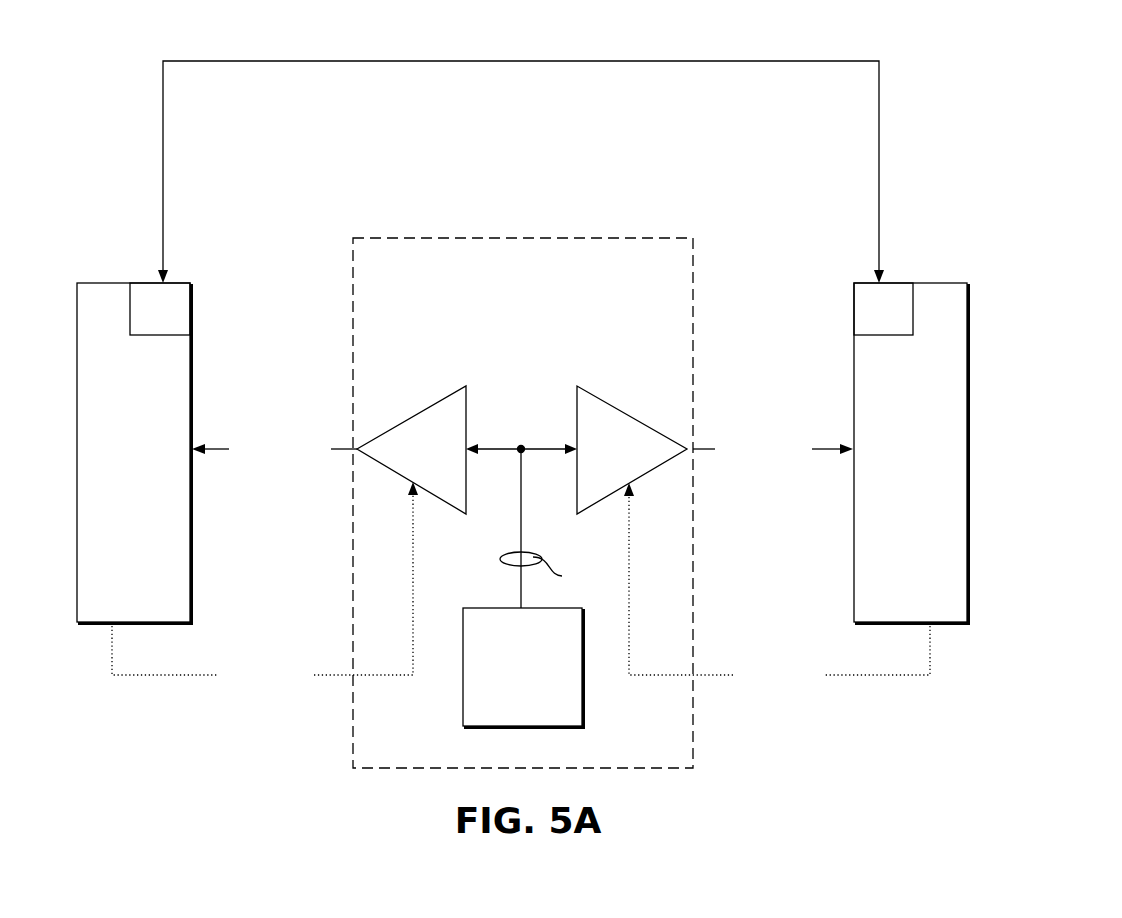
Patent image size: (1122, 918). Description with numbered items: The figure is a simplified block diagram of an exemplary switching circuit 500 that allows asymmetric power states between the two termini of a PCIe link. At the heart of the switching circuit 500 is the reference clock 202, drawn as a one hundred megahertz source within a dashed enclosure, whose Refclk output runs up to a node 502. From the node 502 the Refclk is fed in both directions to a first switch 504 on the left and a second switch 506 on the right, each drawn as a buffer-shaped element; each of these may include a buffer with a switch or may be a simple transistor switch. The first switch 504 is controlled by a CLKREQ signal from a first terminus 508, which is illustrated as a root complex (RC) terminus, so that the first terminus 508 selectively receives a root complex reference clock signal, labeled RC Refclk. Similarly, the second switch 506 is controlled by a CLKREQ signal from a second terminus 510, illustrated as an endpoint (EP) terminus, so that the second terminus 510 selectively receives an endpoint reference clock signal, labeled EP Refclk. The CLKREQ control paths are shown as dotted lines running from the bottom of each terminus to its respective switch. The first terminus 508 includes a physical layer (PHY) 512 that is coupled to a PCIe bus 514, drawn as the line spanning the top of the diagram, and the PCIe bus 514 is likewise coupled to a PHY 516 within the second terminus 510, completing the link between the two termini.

The switching circuit 500 is at (978, 124).
The node 502 is at (521, 443).
The first switch 504 is at (421, 411).
The second switch 506 is at (620, 411).
The first terminus 508 is at (107, 283).
The second terminus 510 is at (935, 283).
The physical layer (PHY) 512 is at (191, 321).
The PCIe bus 514 is at (343, 61).
The PHY 516 is at (854, 321).
The reference clock 202 is at (463, 702).